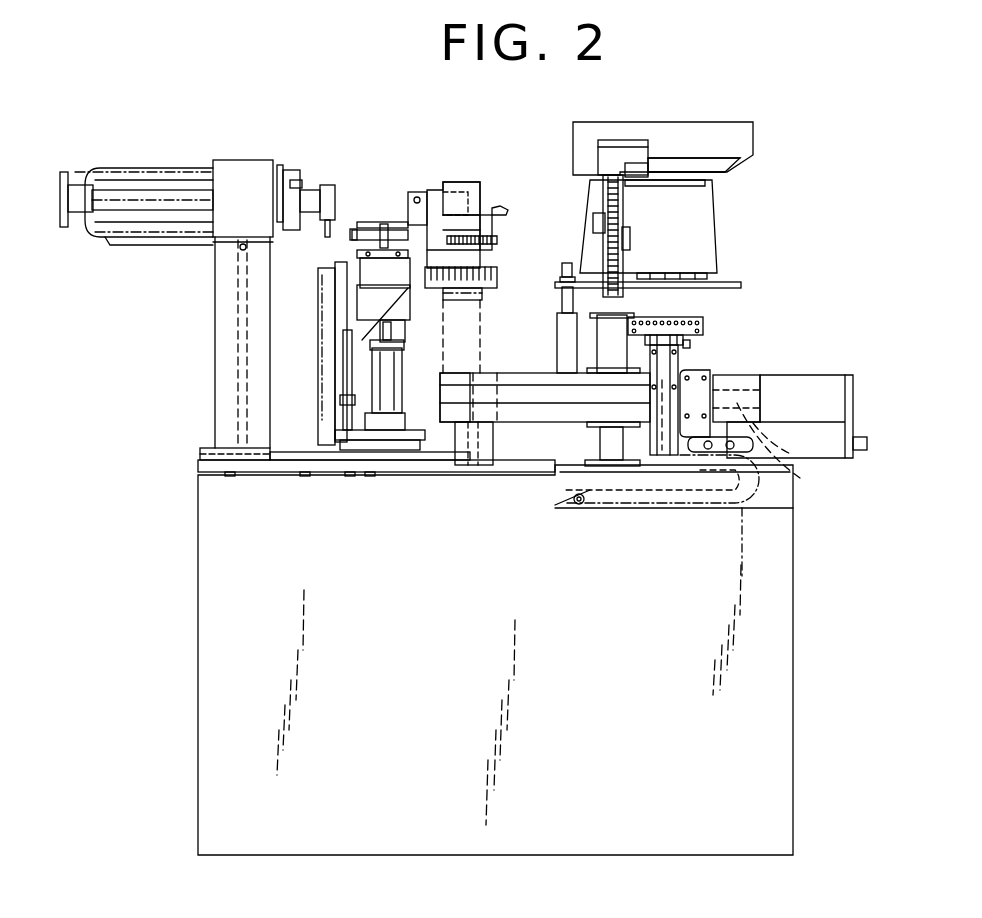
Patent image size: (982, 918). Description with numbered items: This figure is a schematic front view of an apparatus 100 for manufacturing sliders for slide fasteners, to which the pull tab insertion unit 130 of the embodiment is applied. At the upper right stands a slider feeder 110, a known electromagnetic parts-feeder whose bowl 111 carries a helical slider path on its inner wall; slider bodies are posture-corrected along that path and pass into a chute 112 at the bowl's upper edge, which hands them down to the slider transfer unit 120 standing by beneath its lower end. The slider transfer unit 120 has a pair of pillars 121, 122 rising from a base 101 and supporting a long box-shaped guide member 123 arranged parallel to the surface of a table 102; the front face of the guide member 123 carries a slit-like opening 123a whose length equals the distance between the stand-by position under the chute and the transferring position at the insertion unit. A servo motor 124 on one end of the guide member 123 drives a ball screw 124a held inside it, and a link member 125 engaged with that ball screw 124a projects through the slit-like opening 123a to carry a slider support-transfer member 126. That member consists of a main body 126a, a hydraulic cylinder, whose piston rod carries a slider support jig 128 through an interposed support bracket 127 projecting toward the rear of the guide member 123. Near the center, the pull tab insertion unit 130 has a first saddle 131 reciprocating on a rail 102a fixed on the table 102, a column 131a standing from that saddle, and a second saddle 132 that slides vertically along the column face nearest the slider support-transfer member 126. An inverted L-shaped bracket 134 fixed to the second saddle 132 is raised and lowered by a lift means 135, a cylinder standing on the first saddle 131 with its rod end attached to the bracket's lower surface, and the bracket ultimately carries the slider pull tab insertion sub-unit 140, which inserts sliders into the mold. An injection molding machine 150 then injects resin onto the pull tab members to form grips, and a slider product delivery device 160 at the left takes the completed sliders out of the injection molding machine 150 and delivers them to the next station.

The apparatus for manufacturing sliders for slide fasteners 100 is at (842, 229).
The base 101 is at (520, 470).
The table 102 is at (302, 462).
The rail 102a is at (280, 452).
The slider feeder 110 is at (772, 141).
The bowl 111 is at (735, 167).
The chute 112 is at (625, 205).
The slider transfer unit 120 is at (846, 355).
The pillar 121 is at (485, 447).
The pillar 122 is at (610, 440).
The guide member 123 is at (743, 385).
The slit-like opening 123a is at (520, 397).
The servo motor 124 is at (828, 437).
The ball screw 124a is at (800, 478).
The link member 125 is at (670, 473).
The slider support-transfer member 126 is at (700, 353).
The main body 126a is at (652, 410).
The support bracket 127 is at (703, 333).
The slider support jig 128 is at (690, 311).
The pull tab insertion unit 130 is at (382, 185).
The first saddle 131 is at (393, 447).
The column 131a is at (327, 357).
The second saddle 132 is at (318, 292).
The inverted L-shaped bracket 134 is at (367, 290).
The lift means 135 is at (392, 390).
The slider pull tab insertion sub-unit 140 is at (499, 183).
The injection molding machine 150 is at (502, 121).
The slider product delivery device 160 is at (266, 142).